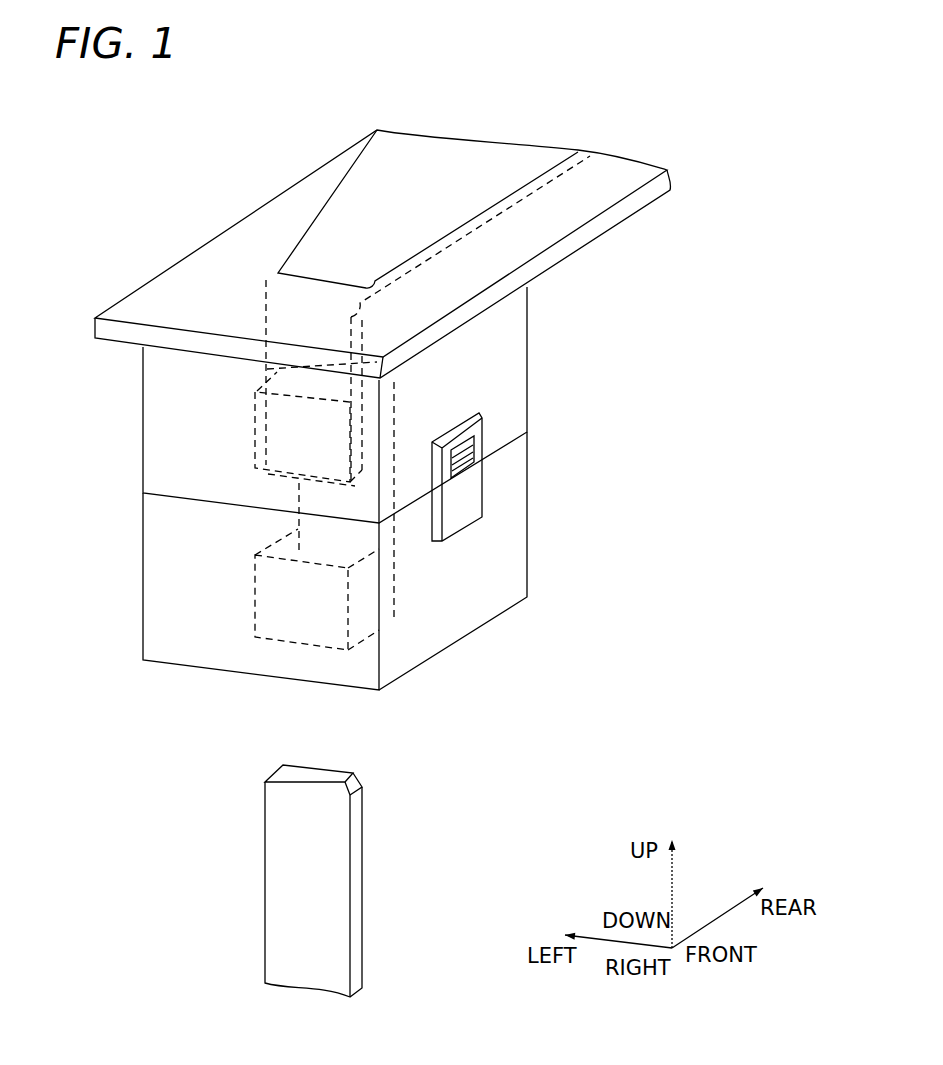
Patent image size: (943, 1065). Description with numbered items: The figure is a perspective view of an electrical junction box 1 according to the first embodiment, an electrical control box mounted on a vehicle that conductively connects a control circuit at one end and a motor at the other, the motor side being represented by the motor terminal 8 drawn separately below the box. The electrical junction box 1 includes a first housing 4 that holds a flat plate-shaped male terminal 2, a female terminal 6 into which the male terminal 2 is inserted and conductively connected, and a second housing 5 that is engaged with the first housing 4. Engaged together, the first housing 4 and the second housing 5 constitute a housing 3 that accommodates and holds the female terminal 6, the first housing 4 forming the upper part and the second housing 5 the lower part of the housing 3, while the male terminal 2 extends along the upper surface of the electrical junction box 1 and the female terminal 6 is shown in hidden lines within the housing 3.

The electrical junction box 1 is at (375, 399).
The male terminal 2 is at (388, 235).
The housing 3 is at (374, 488).
The first housing 4 is at (527, 382).
The second housing 5 is at (527, 488).
The female terminal 6 is at (255, 597).
The motor terminal 8 is at (363, 863).